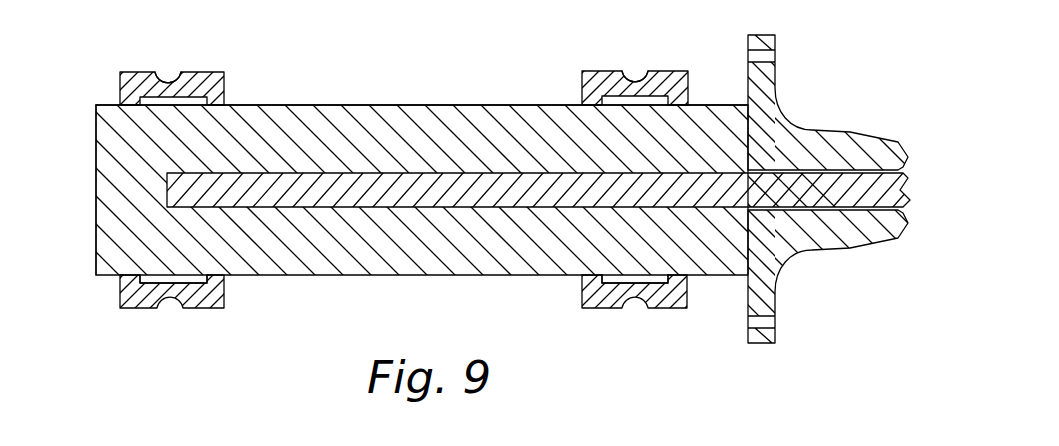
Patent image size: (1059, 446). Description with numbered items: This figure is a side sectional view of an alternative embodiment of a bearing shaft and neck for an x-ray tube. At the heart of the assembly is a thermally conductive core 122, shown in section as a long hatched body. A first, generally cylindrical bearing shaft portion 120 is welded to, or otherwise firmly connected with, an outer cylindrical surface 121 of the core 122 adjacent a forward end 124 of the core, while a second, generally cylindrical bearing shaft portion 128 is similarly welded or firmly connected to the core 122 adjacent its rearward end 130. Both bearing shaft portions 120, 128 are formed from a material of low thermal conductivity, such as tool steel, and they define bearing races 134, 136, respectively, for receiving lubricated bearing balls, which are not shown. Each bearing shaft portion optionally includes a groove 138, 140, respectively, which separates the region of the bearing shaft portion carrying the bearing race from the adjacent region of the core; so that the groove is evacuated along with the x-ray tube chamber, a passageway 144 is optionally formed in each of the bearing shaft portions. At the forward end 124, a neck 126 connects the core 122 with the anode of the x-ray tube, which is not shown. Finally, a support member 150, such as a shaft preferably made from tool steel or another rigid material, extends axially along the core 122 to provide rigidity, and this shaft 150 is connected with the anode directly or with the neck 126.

The first bearing shaft portion 120 is at (597, 75).
The outer cylindrical surface 121 is at (335, 105).
The thermally conductive core 122 is at (425, 142).
The forward end 124 is at (748, 138).
The neck 126 is at (815, 235).
The second bearing shaft portion 128 is at (135, 72).
The rearward end 130 is at (93, 176).
The bearing race 134 is at (636, 83).
The bearing race 136 is at (168, 83).
The groove 138 is at (647, 282).
The groove 140 is at (190, 283).
The passageway 144 is at (225, 278).
The support member 150 is at (377, 195).